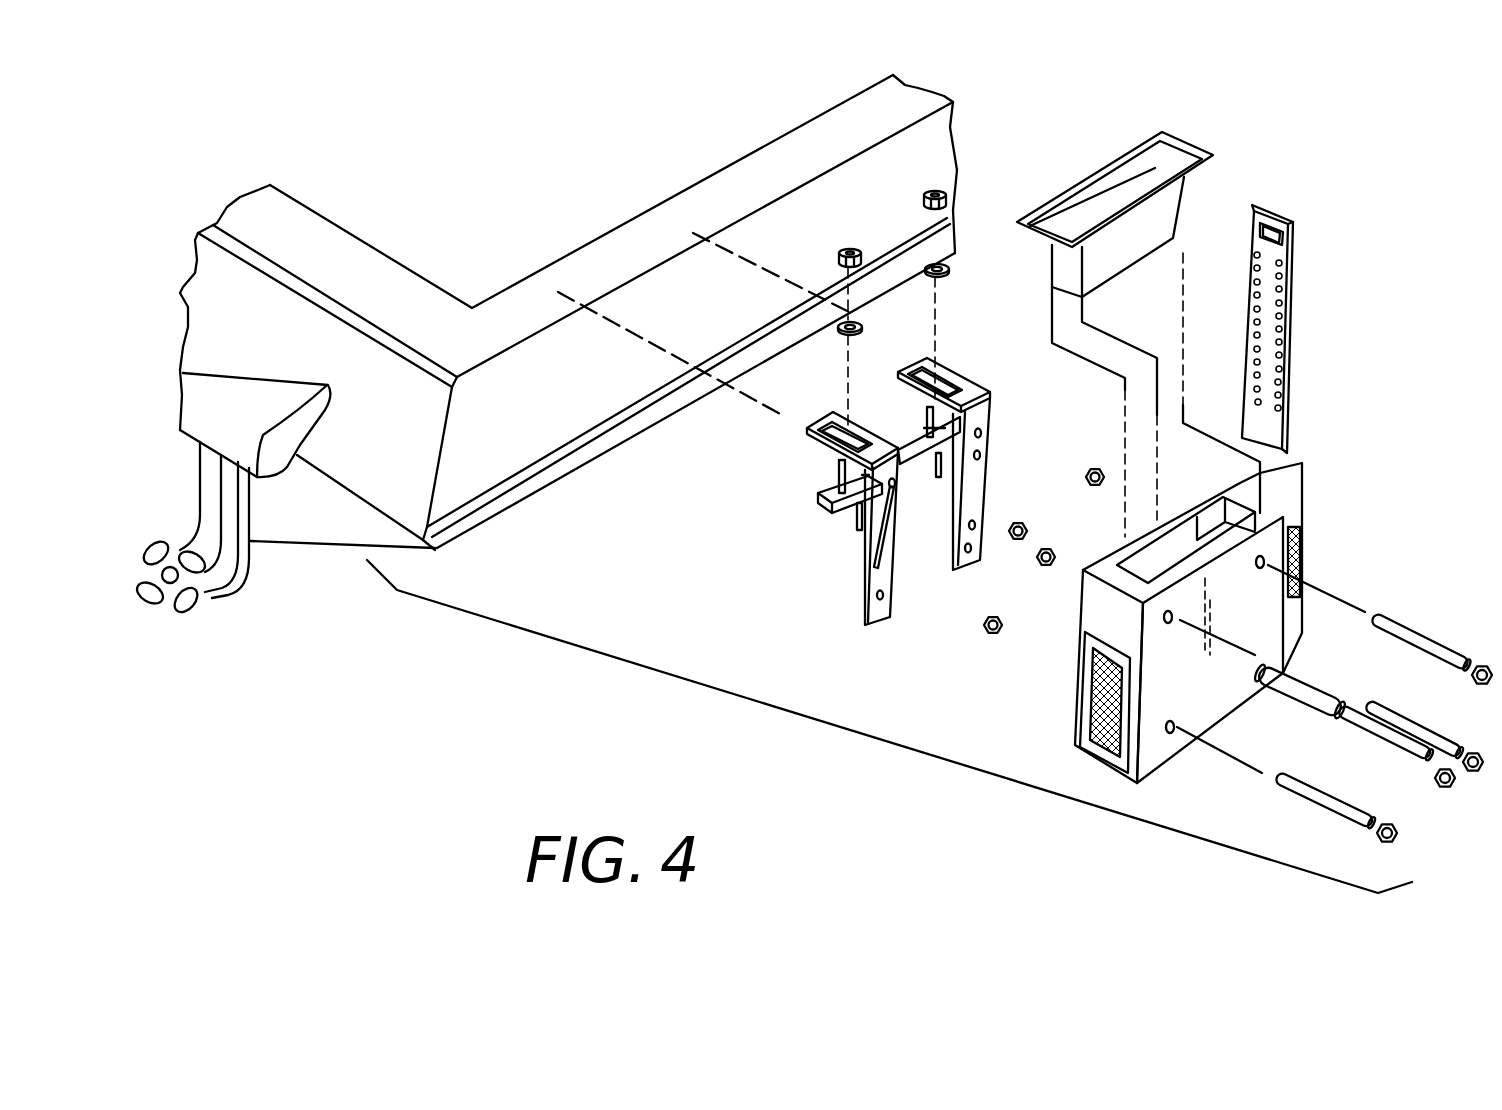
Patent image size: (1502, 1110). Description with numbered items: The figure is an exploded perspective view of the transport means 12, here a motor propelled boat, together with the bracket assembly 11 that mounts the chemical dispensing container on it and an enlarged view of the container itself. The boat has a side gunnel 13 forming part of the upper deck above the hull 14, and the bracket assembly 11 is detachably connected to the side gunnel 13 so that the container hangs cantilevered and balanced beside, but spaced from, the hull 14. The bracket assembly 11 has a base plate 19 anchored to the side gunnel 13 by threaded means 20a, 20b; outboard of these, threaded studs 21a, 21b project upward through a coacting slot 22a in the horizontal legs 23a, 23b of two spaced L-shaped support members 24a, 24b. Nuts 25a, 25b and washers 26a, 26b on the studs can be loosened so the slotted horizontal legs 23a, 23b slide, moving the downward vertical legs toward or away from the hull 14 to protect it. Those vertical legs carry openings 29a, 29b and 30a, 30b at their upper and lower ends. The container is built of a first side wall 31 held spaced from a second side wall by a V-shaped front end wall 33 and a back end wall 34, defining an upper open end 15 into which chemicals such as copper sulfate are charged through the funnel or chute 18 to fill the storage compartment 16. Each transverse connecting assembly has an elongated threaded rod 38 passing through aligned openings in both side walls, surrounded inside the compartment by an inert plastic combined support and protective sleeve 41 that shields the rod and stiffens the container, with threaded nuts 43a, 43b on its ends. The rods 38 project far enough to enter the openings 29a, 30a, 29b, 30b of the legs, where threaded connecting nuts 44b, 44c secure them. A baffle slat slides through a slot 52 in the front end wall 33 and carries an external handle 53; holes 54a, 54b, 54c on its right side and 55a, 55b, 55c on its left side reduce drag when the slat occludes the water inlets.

The bracket assembly 11 is at (790, 503).
The transport means 12 is at (466, 467).
The side gunnel 13 is at (770, 168).
The hull 14 is at (830, 193).
The upper open end 15 is at (1212, 520).
The storage compartment 16 is at (1194, 561).
The charging funnel or chute 18 is at (1142, 165).
The base plate 19 is at (922, 426).
The threaded means 20a is at (935, 482).
The threaded means 20b is at (838, 528).
The threaded stud 21a is at (927, 407).
The threaded stud 21b is at (833, 467).
The coacting slot 22a is at (937, 357).
The horizontal leg 23a is at (964, 361).
The horizontal leg 23b is at (797, 427).
The L-shaped support member 24a is at (1006, 473).
The L-shaped support member 24b is at (876, 559).
The nut 25a is at (940, 187).
The nut 25b is at (847, 247).
The washer 26a is at (950, 266).
The washer 26b is at (862, 325).
The opening 29a is at (993, 407).
The opening 29b is at (987, 537).
The opening 30a is at (875, 570).
The opening 30b is at (867, 620).
The first side wall 31 is at (1253, 617).
The V-shaped front end wall 33 is at (1287, 460).
The back end wall 34 is at (1195, 600).
The elongated threaded rod 38 is at (1355, 717).
The combined support and protective sleeve 41 is at (1302, 697).
The threaded nut 43a is at (1443, 789).
The threaded nut 43b is at (1042, 567).
The threaded connecting nut 44b is at (1025, 523).
The threaded connecting nut 44c is at (1088, 472).
The slot 52 is at (1282, 302).
The handle 53 is at (1267, 228).
The opening 54a is at (1284, 272).
The opening 54b is at (1284, 284).
The opening 54c is at (1285, 300).
The opening 55a is at (1254, 255).
The opening 55b is at (1252, 270).
The opening 55c is at (1252, 290).